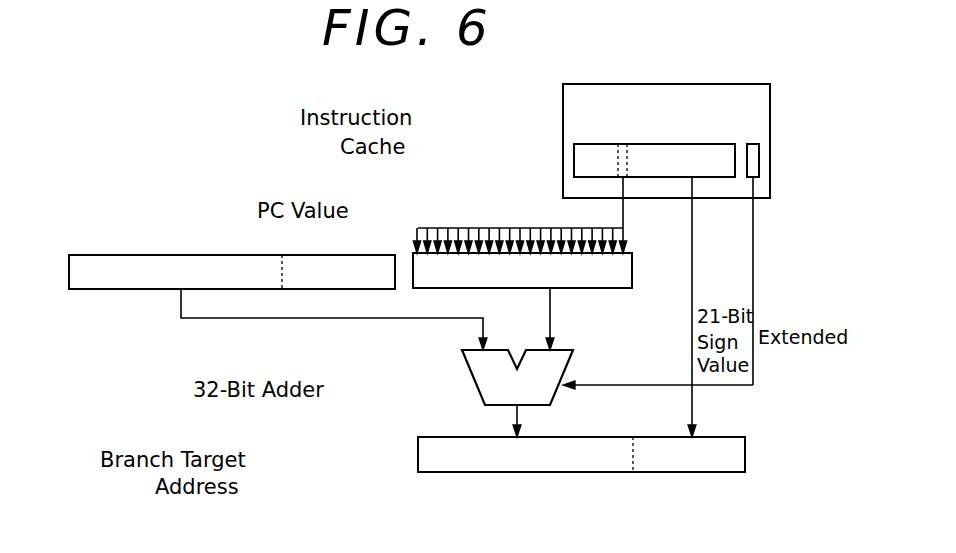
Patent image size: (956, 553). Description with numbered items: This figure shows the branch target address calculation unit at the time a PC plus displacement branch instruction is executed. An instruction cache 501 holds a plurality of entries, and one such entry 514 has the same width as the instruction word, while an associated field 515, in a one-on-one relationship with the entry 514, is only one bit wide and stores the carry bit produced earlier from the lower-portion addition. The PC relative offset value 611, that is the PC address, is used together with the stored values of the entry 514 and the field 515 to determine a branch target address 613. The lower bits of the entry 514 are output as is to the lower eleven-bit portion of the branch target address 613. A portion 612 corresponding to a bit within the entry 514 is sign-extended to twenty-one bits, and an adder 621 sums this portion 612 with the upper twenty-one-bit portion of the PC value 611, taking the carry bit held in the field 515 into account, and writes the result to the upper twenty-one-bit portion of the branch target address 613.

The instruction cache 501 is at (563, 105).
The entry 514 is at (665, 144).
The field 515 is at (752, 144).
The PC relative offset value 611 is at (183, 255).
The sign-extended portion 612 is at (600, 289).
The adder 621 is at (474, 378).
The branch target address 613 is at (418, 452).